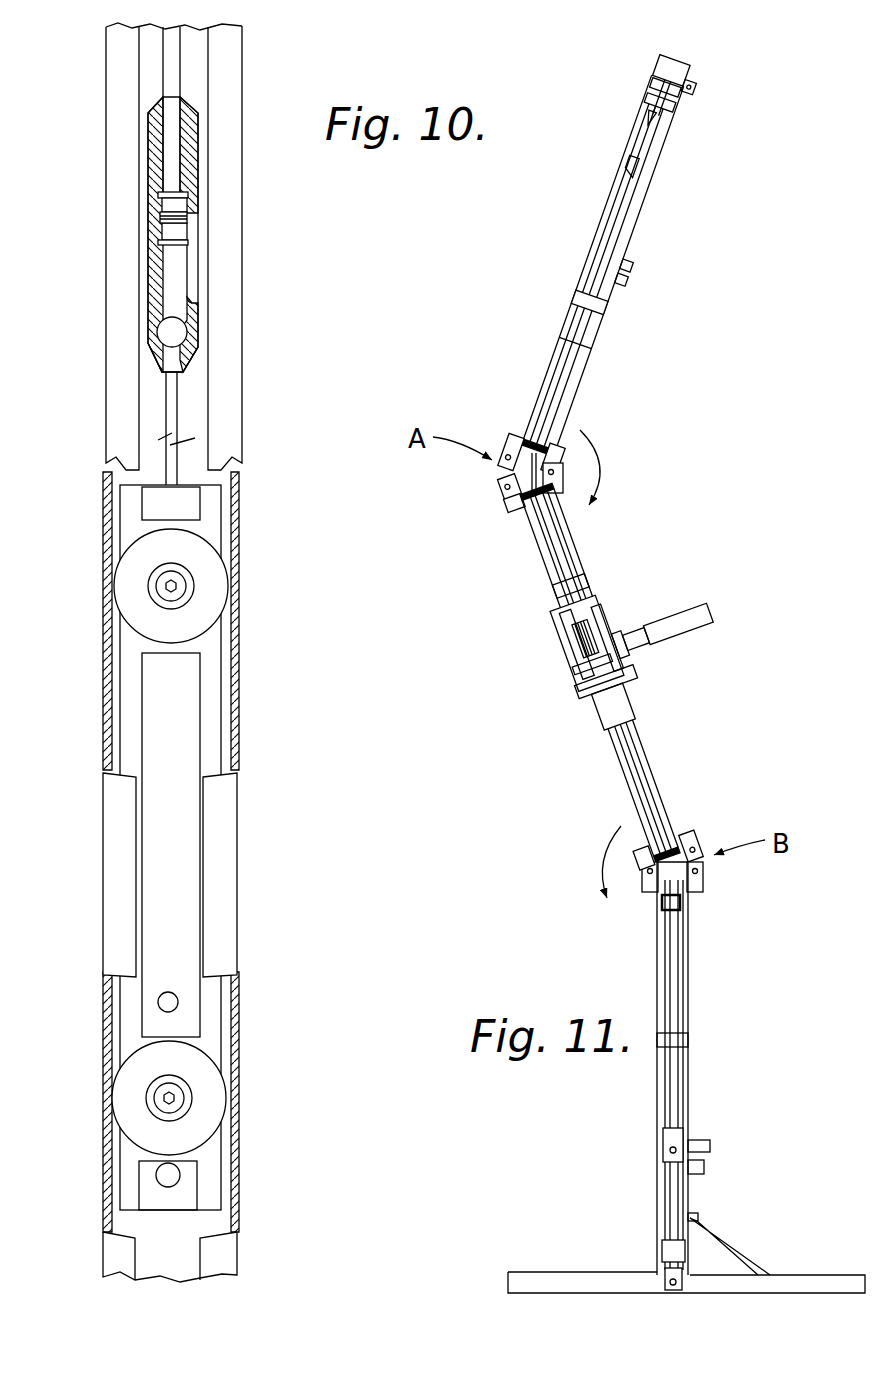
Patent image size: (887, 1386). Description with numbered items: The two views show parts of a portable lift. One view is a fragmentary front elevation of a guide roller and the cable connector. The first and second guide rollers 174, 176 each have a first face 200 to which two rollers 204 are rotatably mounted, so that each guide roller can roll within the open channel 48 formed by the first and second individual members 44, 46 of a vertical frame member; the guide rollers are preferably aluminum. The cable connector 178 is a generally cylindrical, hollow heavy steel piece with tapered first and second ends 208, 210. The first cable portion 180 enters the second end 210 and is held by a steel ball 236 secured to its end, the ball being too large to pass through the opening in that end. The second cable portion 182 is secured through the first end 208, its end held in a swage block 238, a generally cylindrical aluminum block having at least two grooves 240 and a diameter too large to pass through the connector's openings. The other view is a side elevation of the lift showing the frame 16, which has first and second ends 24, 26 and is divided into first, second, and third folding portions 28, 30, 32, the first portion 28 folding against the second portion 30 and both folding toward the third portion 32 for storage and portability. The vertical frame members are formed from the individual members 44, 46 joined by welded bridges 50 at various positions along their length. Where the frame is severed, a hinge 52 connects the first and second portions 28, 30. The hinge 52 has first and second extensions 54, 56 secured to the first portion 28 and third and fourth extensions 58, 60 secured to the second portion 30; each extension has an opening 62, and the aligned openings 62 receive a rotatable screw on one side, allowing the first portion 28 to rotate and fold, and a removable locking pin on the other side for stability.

In FIG. 10, the first end 208 is at (195, 88).
In FIG. 10, the second cable portion 182 is at (172, 119).
In FIG. 10, the cable connector 178 is at (190, 162).
In FIG. 10, the grooves 240 is at (172, 205).
In FIG. 10, the swage block 238 is at (186, 218).
In FIG. 10, the steel ball 236 is at (168, 335).
In FIG. 10, the second end 210 is at (202, 352).
In FIG. 10, the first cable portion 180 is at (172, 418).
In FIG. 10, the rollers 204 is at (210, 565).
In FIG. 10, the first face 200 is at (208, 700).
In FIG. 10, the first guide roller 174 is at (243, 875).
In FIG. 10, the second guide roller 176 is at (218, 845).
In FIG. 11, the first end 24 is at (693, 56).
In FIG. 11, the frame 16 is at (655, 212).
In FIG. 11, the first portion 28 is at (602, 220).
In FIG. 11, the open channel 48 is at (577, 348).
In FIG. 11, the bridges 50 is at (540, 452).
In FIG. 11, the first extension 54 is at (508, 437).
In FIG. 11, the second extension 56 is at (556, 447).
In FIG. 11, the opening 62 is at (503, 486).
In FIG. 11, the fourth extension 60 is at (557, 490).
In FIG. 11, the third extension 58 is at (513, 506).
In FIG. 11, the second individual member 46 is at (580, 569).
In FIG. 11, the first individual member 44 is at (548, 558).
In FIG. 11, the second portion 30 is at (647, 740).
In FIG. 11, the hinge 52 is at (707, 881).
In FIG. 11, the third portion 32 is at (690, 978).
In FIG. 11, the second end 26 is at (666, 1296).